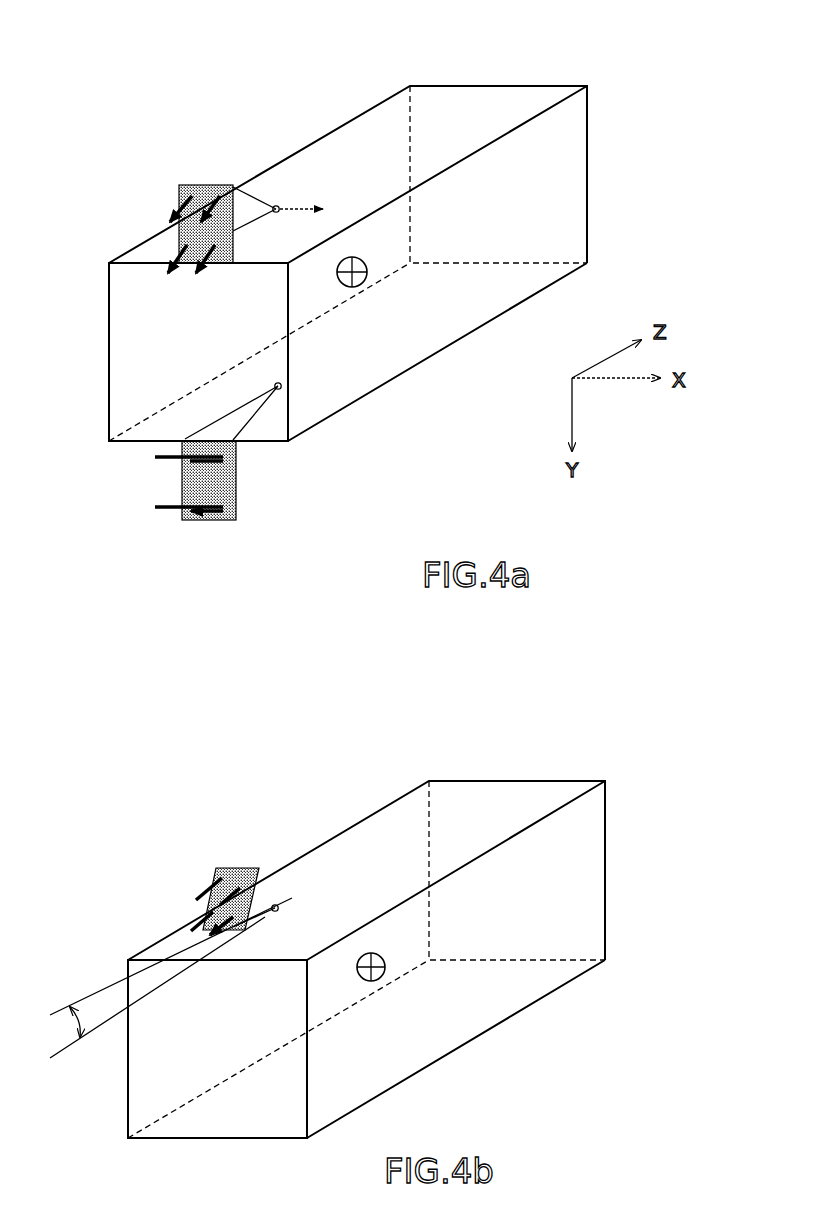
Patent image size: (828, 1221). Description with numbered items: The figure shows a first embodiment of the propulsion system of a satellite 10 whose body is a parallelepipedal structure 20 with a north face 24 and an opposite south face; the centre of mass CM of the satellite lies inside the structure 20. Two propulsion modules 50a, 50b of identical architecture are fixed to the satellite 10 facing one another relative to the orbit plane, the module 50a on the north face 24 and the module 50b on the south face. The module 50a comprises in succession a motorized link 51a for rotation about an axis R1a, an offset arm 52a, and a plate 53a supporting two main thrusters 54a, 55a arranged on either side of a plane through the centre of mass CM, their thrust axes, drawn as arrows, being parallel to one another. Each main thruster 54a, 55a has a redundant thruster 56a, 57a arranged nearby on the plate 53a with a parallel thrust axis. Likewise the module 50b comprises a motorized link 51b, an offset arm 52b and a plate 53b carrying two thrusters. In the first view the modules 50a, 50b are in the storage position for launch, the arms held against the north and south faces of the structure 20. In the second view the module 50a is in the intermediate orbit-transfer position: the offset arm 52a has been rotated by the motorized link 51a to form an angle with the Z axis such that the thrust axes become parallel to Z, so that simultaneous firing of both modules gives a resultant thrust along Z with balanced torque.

In FIG. 4A, the satellite 10 is at (372, 63).
In FIG. 4A, the parallelepipedal structure 20 is at (540, 115).
In FIG. 4B, the parallelepipedal structure 20 is at (562, 810).
In FIG. 4A, the north face 24 is at (488, 97).
In FIG. 4A, the centre of mass CM is at (367, 276).
In FIG. 4B, the centre of mass CM is at (386, 972).
In FIG. 4A, the propulsion module 50a is at (183, 196).
In FIG. 4B, the propulsion module 50a is at (213, 836).
In FIG. 4A, the motorized link 51a is at (248, 218).
In FIG. 4A, the offset arm 52a is at (235, 186).
In FIG. 4A, the plate 53a is at (180, 192).
In FIG. 4A, the main thruster 54a is at (163, 222).
In FIG. 4A, the main thruster 55a is at (175, 236).
In FIG. 4A, the redundant thruster 56a is at (157, 275).
In FIG. 4A, the redundant thruster 57a is at (189, 283).
In FIG. 4A, the rotation axis R1a is at (277, 206).
In FIG. 4A, the propulsion module 50b is at (277, 467).
In FIG. 4A, the motorized link 51b is at (281, 387).
In FIG. 4A, the offset arm 52b is at (253, 428).
In FIG. 4A, the plate 53b is at (212, 521).